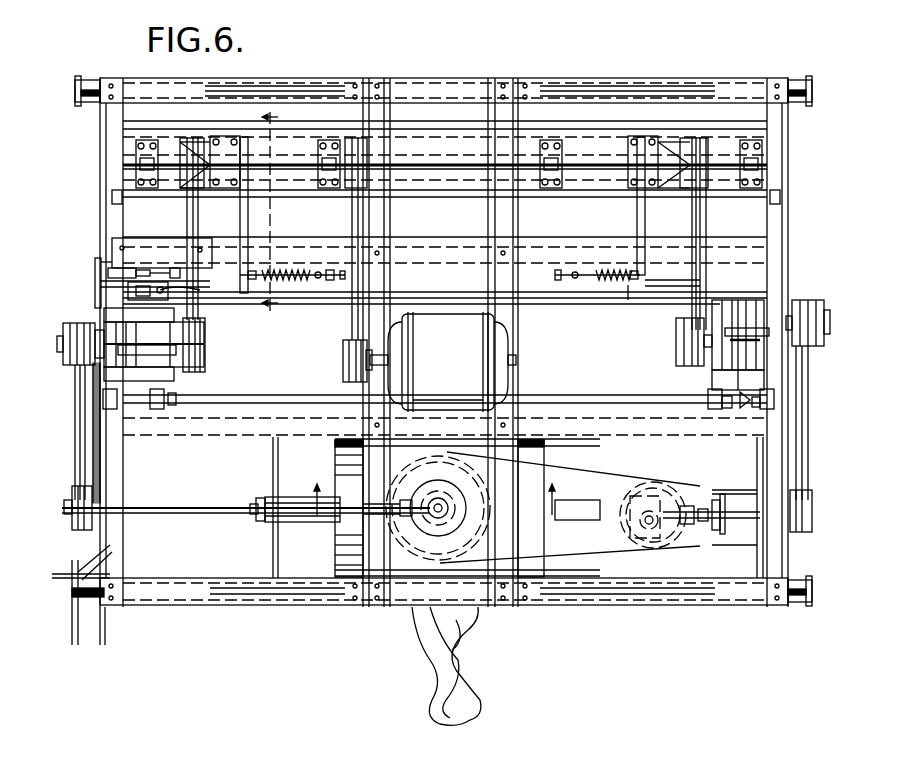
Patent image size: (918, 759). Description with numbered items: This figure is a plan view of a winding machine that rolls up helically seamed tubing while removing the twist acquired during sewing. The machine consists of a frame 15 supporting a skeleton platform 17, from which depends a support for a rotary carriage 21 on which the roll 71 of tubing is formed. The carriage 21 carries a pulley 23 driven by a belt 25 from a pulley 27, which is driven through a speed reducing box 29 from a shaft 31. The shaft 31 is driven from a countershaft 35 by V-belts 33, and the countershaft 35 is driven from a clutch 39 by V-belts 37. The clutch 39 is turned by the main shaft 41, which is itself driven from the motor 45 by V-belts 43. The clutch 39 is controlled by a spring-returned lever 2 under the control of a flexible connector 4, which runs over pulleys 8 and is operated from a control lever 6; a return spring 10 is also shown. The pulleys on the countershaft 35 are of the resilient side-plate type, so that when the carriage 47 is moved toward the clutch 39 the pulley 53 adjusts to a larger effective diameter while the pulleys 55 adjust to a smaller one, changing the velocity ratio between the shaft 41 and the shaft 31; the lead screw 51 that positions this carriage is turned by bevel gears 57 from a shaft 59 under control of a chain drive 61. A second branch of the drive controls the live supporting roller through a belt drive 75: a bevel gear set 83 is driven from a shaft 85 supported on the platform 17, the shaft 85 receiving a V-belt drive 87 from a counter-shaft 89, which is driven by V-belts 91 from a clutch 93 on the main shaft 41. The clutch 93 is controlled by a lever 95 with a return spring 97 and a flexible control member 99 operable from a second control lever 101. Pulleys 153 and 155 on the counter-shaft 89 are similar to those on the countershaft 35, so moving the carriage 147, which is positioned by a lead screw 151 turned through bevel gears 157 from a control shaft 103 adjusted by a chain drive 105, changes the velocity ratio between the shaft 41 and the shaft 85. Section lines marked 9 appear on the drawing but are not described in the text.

The spring-returned lever 2 is at (650, 205).
The flexible connector 4 is at (300, 300).
The control lever 6 is at (106, 638).
The pulleys 8 is at (672, 286).
The section line 9- 9 is at (277, 211).
The return spring 10 is at (458, 397).
The frame 15 is at (90, 88).
The skeleton platform 17 is at (402, 90).
The rotary carriage 21 is at (332, 518).
The pulley 23 is at (418, 560).
The belt 25 is at (552, 468).
The pulley 27 is at (652, 548).
The speed reducing box 29 is at (648, 494).
The shaft 31 is at (722, 508).
The V-belts 33 is at (804, 408).
The countershaft 35 is at (760, 320).
The V-belts 37 is at (702, 214).
The clutch 39 is at (692, 140).
The main shaft 41 is at (440, 180).
The V-belts 43 is at (352, 225).
The motor 45 is at (441, 362).
The carriage 47 is at (718, 344).
The lead screw 51 is at (740, 368).
The pulley 53 is at (678, 350).
The pulleys 55 is at (808, 342).
The bevel gears 57 is at (744, 408).
The shaft 59 is at (258, 398).
The chain drive 61 is at (94, 450).
The roll 71 is at (340, 456).
The belt drive 75 is at (254, 502).
The bevel gear set 83 is at (418, 494).
The shaft 85 is at (212, 512).
The V-belt drive 87 is at (84, 418).
The counter-shaft 89 is at (150, 350).
The V-belts 91 is at (188, 222).
The clutch 93 is at (222, 142).
The lever 95 is at (242, 215).
The return spring 97 is at (280, 272).
The flexible control member 99 is at (205, 292).
The second control lever 101 is at (70, 640).
The control shaft 103 is at (112, 268).
The chain drive 105 is at (96, 282).
The carriage 147 is at (170, 334).
The lead screw 151 is at (168, 292).
The pulley 153 is at (198, 366).
The pulley 155 is at (82, 362).
The bevel gears 157 is at (162, 241).